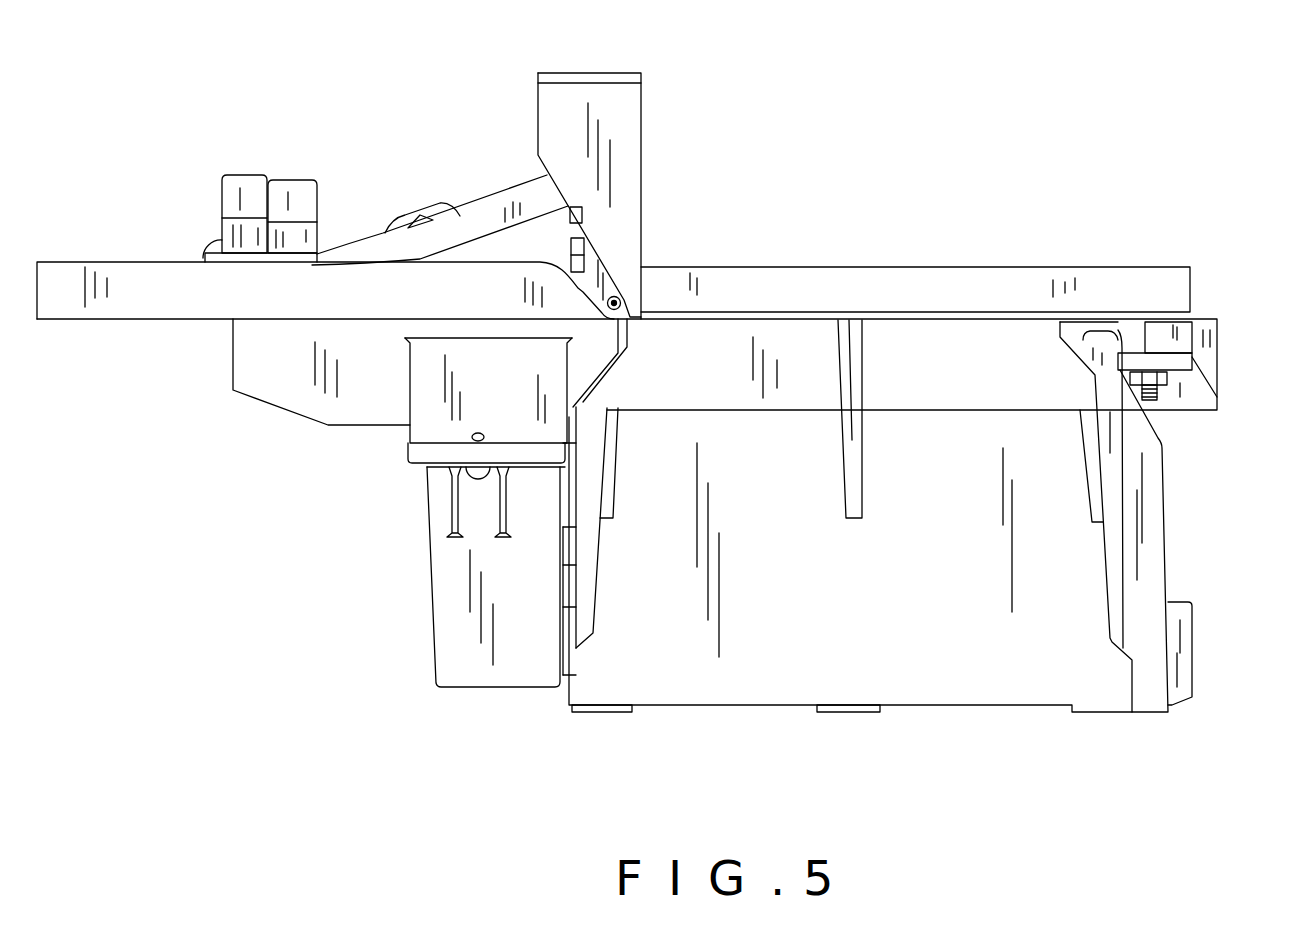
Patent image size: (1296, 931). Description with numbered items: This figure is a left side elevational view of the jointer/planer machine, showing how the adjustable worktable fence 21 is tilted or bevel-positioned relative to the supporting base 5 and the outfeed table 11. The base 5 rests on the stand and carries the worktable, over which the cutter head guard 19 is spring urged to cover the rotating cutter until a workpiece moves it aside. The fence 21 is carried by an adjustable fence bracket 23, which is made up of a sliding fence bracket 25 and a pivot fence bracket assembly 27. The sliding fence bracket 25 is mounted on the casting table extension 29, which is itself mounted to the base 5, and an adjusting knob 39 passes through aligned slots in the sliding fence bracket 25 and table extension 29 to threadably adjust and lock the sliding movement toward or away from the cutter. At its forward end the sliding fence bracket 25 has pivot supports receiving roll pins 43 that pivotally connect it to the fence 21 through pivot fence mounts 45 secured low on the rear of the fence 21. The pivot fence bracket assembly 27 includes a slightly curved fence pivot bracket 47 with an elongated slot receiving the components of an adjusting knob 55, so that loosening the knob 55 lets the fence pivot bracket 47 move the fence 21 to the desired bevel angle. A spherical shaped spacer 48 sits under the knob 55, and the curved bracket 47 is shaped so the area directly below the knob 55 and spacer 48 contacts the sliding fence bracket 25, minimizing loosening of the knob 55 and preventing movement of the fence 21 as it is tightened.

The base 5 is at (975, 680).
The outfeed table 11 is at (993, 320).
The cutter head guard 19 is at (1137, 265).
The adjustable worktable fence 21 is at (612, 106).
The adjustable fence bracket 23 is at (440, 148).
The sliding fence bracket 25 is at (258, 311).
The pivot fence bracket assembly 27 is at (451, 176).
The table extension 29 is at (369, 390).
The adjusting knob 39 is at (290, 203).
The roll pin 43 is at (622, 294).
The pivot fence mount 45 is at (593, 263).
The fence pivot bracket 47 is at (506, 180).
The spherical shaped spacer 48 is at (218, 246).
The adjusting knob 55 is at (241, 207).